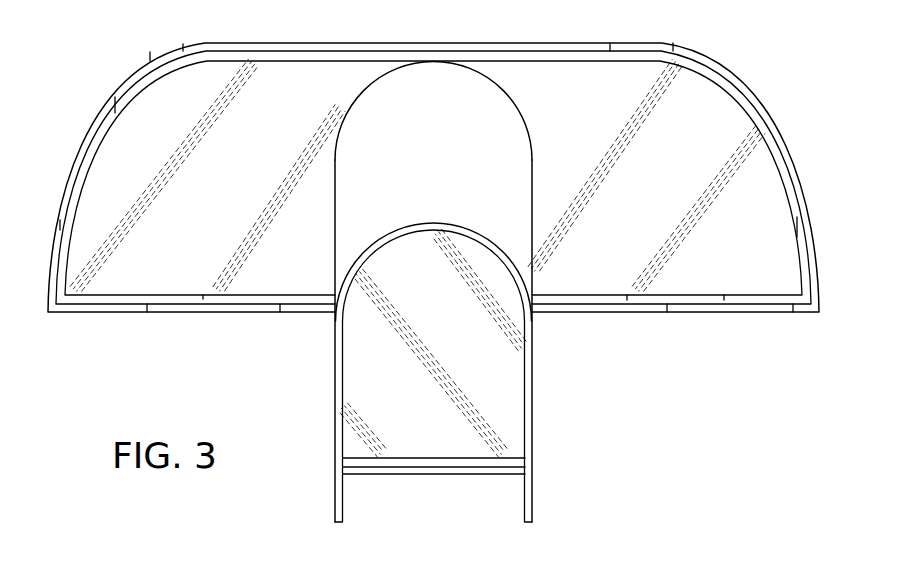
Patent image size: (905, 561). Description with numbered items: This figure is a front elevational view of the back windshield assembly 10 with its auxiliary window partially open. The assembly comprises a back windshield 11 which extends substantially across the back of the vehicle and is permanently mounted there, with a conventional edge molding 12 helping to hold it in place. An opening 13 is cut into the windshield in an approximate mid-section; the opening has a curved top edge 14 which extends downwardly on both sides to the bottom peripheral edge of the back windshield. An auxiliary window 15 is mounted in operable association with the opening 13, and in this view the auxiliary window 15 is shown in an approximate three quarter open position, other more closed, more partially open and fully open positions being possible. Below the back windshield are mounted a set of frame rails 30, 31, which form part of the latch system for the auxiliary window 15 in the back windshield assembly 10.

The back windshield assembly 10 is at (97, 342).
The back windshield 11 is at (268, 283).
The edge molding 12 is at (753, 312).
The opening 13 is at (447, 154).
The curved top edge 14 is at (490, 79).
The auxiliary window 15 is at (352, 390).
The frame rail 30 is at (335, 488).
The frame rail 31 is at (523, 488).